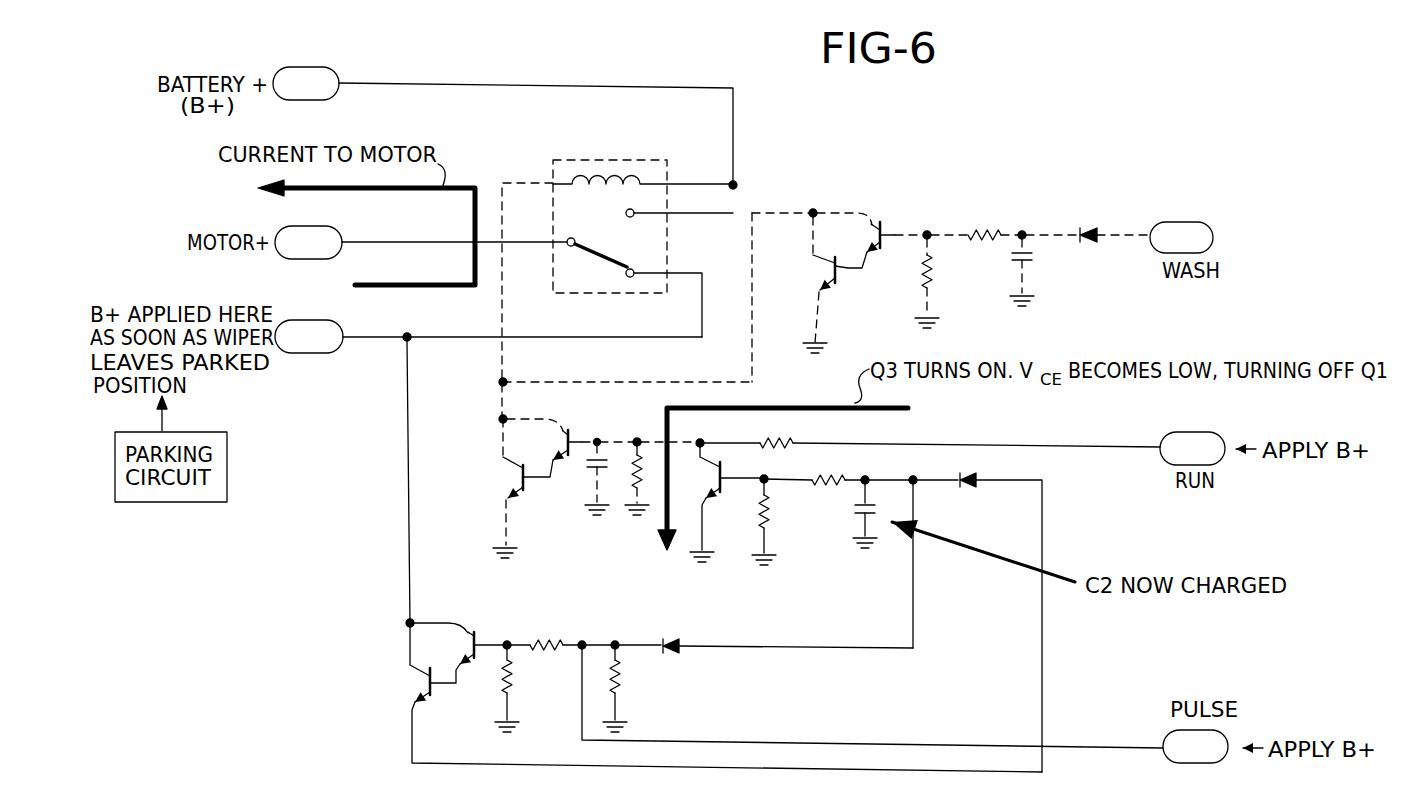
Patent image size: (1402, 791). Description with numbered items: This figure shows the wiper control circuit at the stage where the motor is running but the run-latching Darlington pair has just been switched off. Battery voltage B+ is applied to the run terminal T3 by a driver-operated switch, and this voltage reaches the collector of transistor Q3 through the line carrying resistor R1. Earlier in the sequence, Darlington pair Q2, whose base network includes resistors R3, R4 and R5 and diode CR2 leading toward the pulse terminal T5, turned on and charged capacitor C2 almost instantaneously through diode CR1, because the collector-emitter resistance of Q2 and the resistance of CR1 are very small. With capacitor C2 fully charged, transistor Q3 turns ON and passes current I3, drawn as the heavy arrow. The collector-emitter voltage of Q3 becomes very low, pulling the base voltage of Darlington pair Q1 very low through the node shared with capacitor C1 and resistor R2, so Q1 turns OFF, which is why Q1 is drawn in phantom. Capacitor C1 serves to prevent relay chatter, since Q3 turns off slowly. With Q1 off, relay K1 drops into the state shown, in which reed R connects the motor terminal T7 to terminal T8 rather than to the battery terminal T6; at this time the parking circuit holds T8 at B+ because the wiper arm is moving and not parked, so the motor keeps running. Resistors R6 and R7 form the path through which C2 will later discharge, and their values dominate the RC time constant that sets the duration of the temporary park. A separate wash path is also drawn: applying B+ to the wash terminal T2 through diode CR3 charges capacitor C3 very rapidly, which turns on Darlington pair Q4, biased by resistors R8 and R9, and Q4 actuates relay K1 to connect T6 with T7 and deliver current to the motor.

The terminal T6 is at (503, 126).
The terminal T7 is at (421, 242).
The terminal T8 is at (488, 336).
The terminal T2 is at (1181, 237).
The terminal T3 is at (1192, 448).
The terminal T5 is at (1195, 746).
The relay K1 is at (619, 277).
The reed R is at (622, 255).
The Darlington pair Q1 is at (545, 468).
The Darlington pair Q2 is at (724, 682).
The transistor Q3 is at (721, 500).
The Darlington pair Q4 is at (839, 268).
The resistor R1 is at (932, 429).
The resistor R2 is at (650, 476).
The resistor R3 is at (546, 630).
The resistor R4 is at (520, 686).
The resistor R5 is at (619, 686).
The resistor R6 is at (814, 469).
The resistor R7 is at (780, 520).
The resistor R8 is at (974, 221).
The resistor R9 is at (940, 279).
The capacitor C1 is at (585, 477).
The capacitor C2 is at (847, 512).
The capacitor C3 is at (1004, 268).
The diode CR1 is at (955, 622).
The diode CR2 is at (766, 632).
The diode CR3 is at (1088, 250).
The current I3 is at (783, 465).